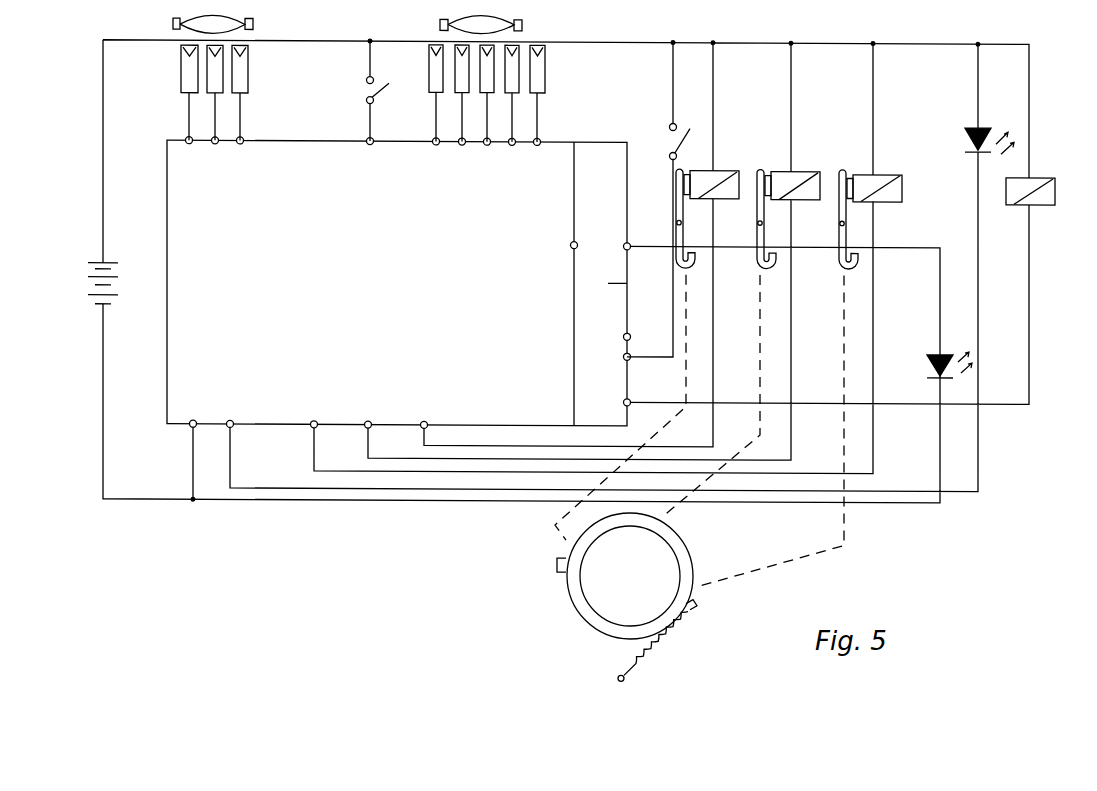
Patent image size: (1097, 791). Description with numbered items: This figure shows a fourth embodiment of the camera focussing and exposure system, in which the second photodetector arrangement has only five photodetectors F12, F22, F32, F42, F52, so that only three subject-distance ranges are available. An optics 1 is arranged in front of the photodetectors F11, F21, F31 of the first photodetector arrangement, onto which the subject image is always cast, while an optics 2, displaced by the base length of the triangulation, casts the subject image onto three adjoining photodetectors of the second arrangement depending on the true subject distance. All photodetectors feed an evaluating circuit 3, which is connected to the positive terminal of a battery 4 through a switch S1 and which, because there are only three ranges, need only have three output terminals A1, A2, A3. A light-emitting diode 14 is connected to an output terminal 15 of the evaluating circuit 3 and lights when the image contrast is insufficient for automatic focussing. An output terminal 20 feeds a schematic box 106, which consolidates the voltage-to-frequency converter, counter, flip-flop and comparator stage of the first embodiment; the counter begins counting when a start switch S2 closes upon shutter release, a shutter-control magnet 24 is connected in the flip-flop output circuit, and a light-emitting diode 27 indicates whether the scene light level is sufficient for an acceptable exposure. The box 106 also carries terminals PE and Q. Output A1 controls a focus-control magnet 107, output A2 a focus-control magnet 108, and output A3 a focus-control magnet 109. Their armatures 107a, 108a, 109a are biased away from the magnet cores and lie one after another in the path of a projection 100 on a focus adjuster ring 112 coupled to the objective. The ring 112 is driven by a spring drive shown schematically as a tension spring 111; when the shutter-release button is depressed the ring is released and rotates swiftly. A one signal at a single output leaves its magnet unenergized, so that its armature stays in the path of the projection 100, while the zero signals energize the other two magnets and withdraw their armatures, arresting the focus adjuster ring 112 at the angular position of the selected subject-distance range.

The optics 1 is at (233, 21).
The optics 2 is at (490, 22).
The evaluating circuit 3 is at (182, 201).
The battery 4 is at (125, 279).
The light-emitting diode 14 is at (966, 140).
The output terminal 15 is at (230, 423).
The output terminal 20 is at (571, 243).
The shutter-control magnet 24 is at (1045, 197).
The light-emitting diode 27 is at (926, 362).
The projection 100 is at (556, 566).
The schematic box 106 is at (627, 283).
The focus-control magnet 107 is at (893, 175).
The focus-control magnet 108 is at (812, 172).
The focus-control magnet 109 is at (733, 171).
The armature 107a is at (855, 238).
The armature 108a is at (773, 238).
The armature 109a is at (692, 238).
The tension spring 111 is at (660, 645).
The focus adjuster ring 112 is at (686, 556).
The photodetector F11 is at (190, 63).
The photodetector F21 is at (212, 83).
The photodetector F31 is at (244, 82).
The photodetector F12 is at (434, 86).
The photodetector F22 is at (462, 85).
The photodetector F32 is at (488, 85).
The photodetector F42 is at (512, 82).
The photodetector F52 is at (542, 70).
The switch S1 is at (380, 79).
The start switch S2 is at (671, 139).
The output A1 is at (315, 413).
The output A2 is at (368, 414).
The output A3 is at (423, 414).
The terminal PE is at (607, 337).
The output terminal Q is at (611, 402).